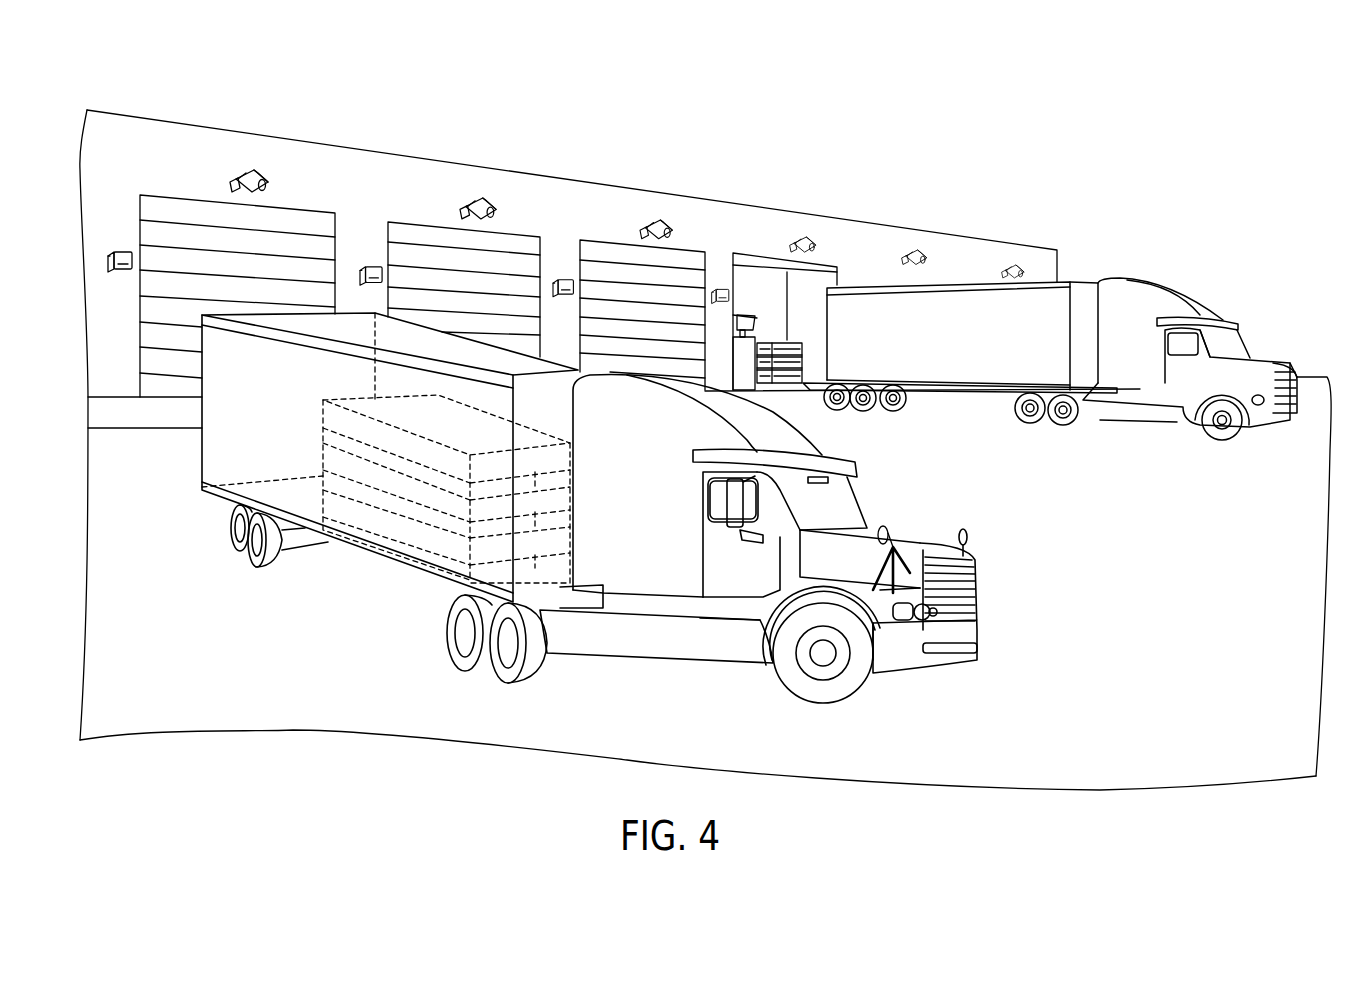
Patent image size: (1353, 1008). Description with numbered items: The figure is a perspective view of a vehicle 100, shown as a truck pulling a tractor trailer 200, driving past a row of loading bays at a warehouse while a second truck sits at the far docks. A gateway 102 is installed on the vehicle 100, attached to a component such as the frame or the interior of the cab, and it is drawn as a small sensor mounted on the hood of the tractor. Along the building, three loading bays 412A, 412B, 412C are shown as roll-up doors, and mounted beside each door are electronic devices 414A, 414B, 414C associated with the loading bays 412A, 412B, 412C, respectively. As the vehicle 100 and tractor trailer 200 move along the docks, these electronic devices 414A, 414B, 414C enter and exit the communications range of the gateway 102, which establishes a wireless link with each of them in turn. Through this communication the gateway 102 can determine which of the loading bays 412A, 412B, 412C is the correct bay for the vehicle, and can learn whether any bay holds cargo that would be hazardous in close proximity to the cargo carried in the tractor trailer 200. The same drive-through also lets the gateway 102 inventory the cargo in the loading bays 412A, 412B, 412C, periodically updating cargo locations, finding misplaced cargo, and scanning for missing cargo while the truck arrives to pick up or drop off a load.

The vehicle 100 is at (823, 442).
The gateway 102 is at (828, 490).
The tractor trailer 200 is at (200, 468).
The loading bay 412A is at (295, 218).
The loading bay 412B is at (513, 240).
The loading bay 412C is at (693, 255).
The electronic device 414A is at (123, 253).
The electronic device 414B is at (375, 272).
The electronic device 414C is at (563, 280).